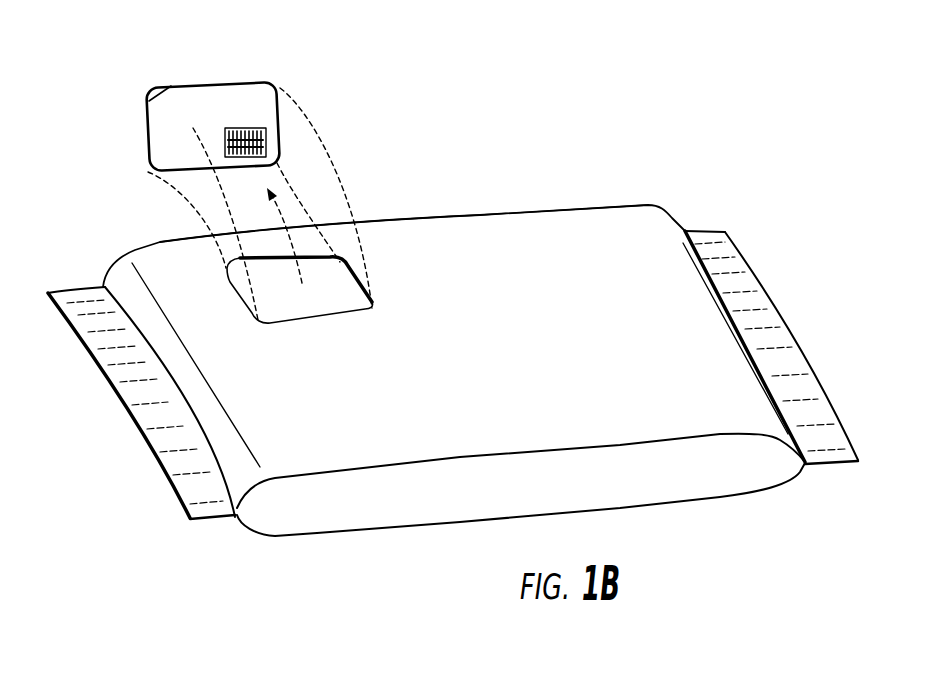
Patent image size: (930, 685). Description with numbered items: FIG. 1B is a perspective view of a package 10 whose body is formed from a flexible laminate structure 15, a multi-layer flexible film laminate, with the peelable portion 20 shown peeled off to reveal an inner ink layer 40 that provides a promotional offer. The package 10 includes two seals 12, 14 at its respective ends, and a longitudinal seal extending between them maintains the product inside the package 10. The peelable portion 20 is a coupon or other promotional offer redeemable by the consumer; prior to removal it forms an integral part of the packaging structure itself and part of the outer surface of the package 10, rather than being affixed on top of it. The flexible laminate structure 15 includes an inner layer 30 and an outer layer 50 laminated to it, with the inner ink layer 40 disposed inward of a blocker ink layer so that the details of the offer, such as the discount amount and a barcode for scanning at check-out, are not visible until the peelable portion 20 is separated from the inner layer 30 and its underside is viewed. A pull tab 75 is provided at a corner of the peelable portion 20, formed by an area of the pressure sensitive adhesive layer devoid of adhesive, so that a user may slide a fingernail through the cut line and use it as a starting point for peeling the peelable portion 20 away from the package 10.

The package 10 is at (708, 137).
The seal 12 is at (128, 373).
The seal 14 is at (752, 300).
The flexible laminate structure 15 is at (187, 293).
The peelable portion 20 is at (249, 82).
The inner layer 30 is at (345, 290).
The inner ink layer 40 is at (160, 142).
The outer layer 50 is at (517, 253).
The pull tab 75 is at (146, 80).